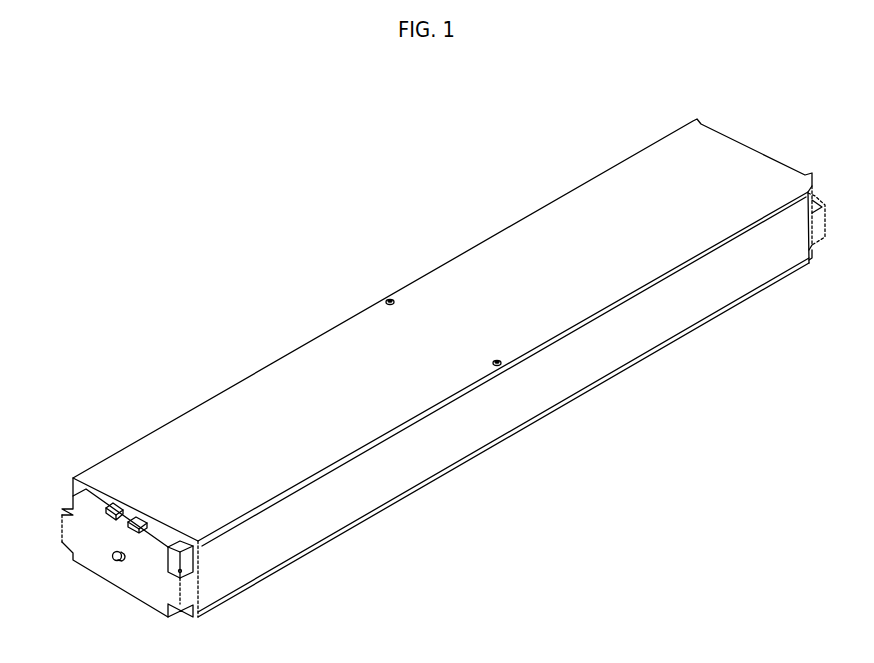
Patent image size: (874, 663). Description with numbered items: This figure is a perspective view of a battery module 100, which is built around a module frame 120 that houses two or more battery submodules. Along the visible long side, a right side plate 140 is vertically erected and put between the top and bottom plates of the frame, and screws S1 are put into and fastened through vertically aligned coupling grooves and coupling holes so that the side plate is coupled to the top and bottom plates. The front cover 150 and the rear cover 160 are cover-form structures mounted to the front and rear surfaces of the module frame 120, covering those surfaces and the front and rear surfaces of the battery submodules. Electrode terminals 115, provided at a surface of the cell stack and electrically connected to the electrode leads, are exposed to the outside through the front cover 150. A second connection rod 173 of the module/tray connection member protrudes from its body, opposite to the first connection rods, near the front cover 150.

The battery module 100 is at (264, 128).
The module frame 120 is at (252, 364).
The right side plate 140 is at (362, 505).
The front cover 150 is at (96, 556).
The rear cover 160 is at (722, 134).
The electrode terminal 115 is at (137, 516).
The second connection rod 173 is at (116, 563).
The screw S1 is at (389, 298).